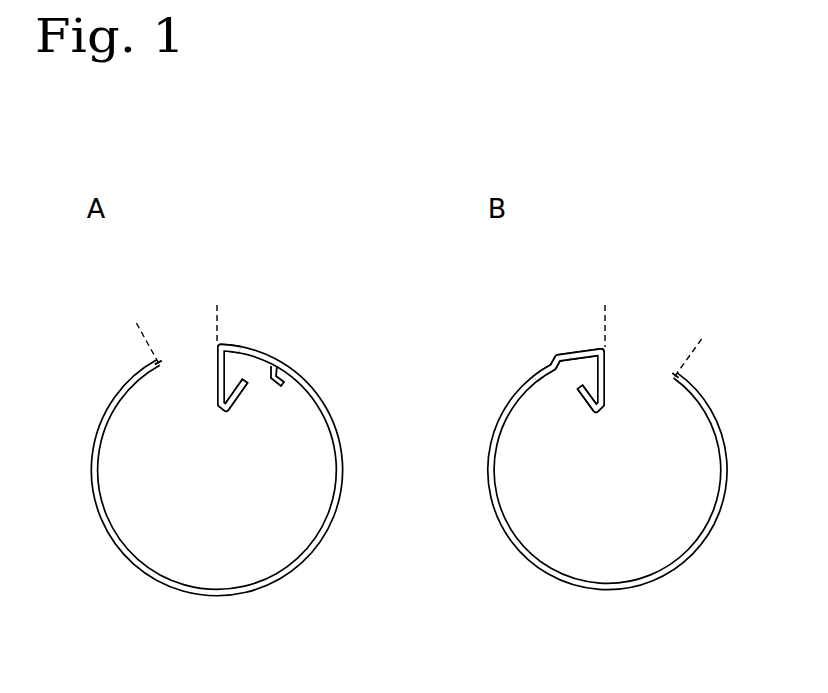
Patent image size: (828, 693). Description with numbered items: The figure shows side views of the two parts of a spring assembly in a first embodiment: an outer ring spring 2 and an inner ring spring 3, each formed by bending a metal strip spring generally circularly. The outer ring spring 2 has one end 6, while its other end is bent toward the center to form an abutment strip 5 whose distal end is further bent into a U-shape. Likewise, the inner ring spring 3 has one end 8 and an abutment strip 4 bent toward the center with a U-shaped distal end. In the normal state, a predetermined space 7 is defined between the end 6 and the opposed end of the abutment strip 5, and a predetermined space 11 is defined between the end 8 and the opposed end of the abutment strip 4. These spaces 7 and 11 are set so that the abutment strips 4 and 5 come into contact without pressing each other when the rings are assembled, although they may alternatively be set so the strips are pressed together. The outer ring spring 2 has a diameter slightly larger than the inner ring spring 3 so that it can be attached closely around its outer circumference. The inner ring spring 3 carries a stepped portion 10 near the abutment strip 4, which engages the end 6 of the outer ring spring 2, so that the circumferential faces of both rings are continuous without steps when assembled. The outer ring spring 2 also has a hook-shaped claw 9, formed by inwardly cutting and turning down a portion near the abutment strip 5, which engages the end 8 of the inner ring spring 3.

In FIG. 1A, the outer ring spring 2 is at (279, 355).
In FIG. 1B, the outer ring spring 2 is at (607, 469).
In FIG. 1B, the inner ring spring 3 is at (583, 345).
In FIG. 1B, the abutment strip 4 is at (608, 388).
In FIG. 1A, the abutment strip 5 is at (217, 384).
In FIG. 1A, the end 6 is at (154, 360).
In FIG. 1A, the space 7 is at (141, 332).
In FIG. 1B, the end 8 is at (678, 372).
In FIG. 1A, the hook-shaped claw 9 is at (274, 385).
In FIG. 1B, the stepped portion 10 is at (552, 360).
In FIG. 1B, the space 11 is at (690, 347).